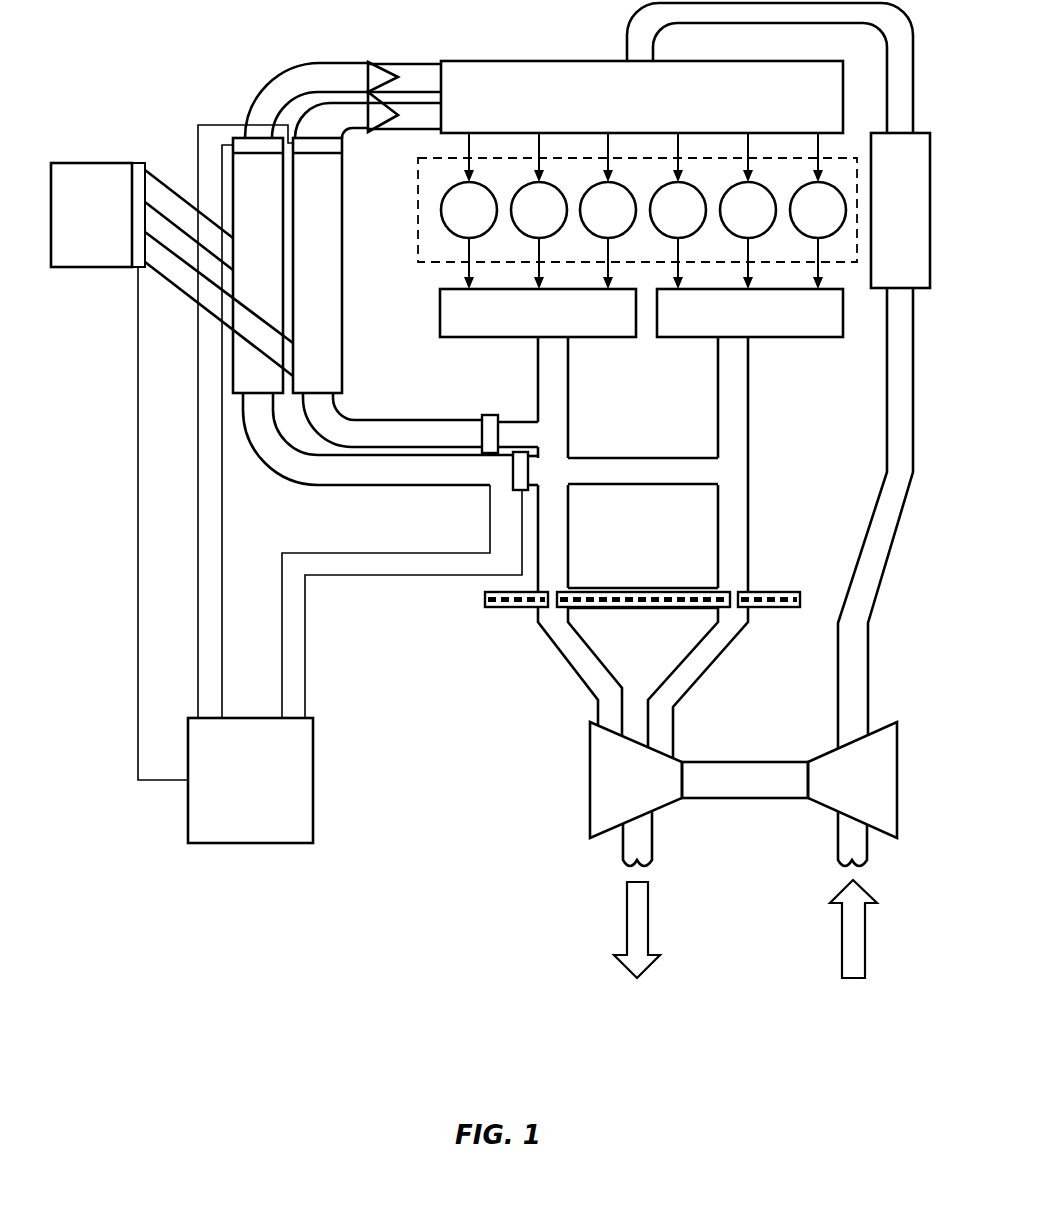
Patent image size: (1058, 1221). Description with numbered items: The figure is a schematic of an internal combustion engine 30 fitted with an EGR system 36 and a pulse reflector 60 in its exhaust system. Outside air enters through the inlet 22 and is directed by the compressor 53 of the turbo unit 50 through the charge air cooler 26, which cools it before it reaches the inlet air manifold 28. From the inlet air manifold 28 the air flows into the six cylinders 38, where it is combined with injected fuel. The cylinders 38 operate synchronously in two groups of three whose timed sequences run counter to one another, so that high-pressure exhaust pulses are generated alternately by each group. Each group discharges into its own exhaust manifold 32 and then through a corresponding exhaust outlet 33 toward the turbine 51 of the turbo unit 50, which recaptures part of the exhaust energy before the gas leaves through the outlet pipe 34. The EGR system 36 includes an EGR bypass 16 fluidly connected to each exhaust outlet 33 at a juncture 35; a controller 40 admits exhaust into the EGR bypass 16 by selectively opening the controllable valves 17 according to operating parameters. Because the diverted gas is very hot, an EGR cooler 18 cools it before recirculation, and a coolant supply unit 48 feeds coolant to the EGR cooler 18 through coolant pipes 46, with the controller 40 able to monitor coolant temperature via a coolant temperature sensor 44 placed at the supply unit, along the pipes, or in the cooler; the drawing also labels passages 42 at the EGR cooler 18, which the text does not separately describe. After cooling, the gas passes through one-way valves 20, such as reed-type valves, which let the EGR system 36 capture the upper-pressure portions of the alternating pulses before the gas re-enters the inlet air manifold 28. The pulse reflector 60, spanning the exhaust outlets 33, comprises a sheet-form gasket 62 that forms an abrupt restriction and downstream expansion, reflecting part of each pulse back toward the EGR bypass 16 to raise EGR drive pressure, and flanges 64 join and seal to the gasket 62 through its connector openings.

The EGR bypass 16 is at (387, 433).
The controllable valve 17 is at (493, 437).
The EGR cooler 18 is at (244, 284).
The one-way valve 20 is at (380, 112).
The inlet 22 is at (869, 850).
The charge air cooler 26 is at (886, 223).
The inlet air manifold 28 is at (628, 111).
The internal combustion engine 30 is at (418, 208).
The exhaust manifold 32 is at (525, 325).
The exhaust outlet 33 is at (571, 397).
The outlet pipe 34 is at (621, 850).
The juncture 35 is at (530, 411).
The EGR system 36 is at (370, 473).
The cylinder 38 is at (457, 222).
The controller 40 is at (236, 792).
The coolant passage 42 is at (313, 145).
The coolant temperature sensor 44 is at (140, 170).
The coolant pipe 46 is at (174, 206).
The coolant supply unit 48 is at (78, 230).
The turbo unit 50 is at (743, 757).
The turbine 51 is at (619, 789).
The compressor 53 is at (839, 789).
The pulse reflector 60 is at (659, 596).
The gasket 62 is at (800, 600).
The flange 64 is at (490, 593).